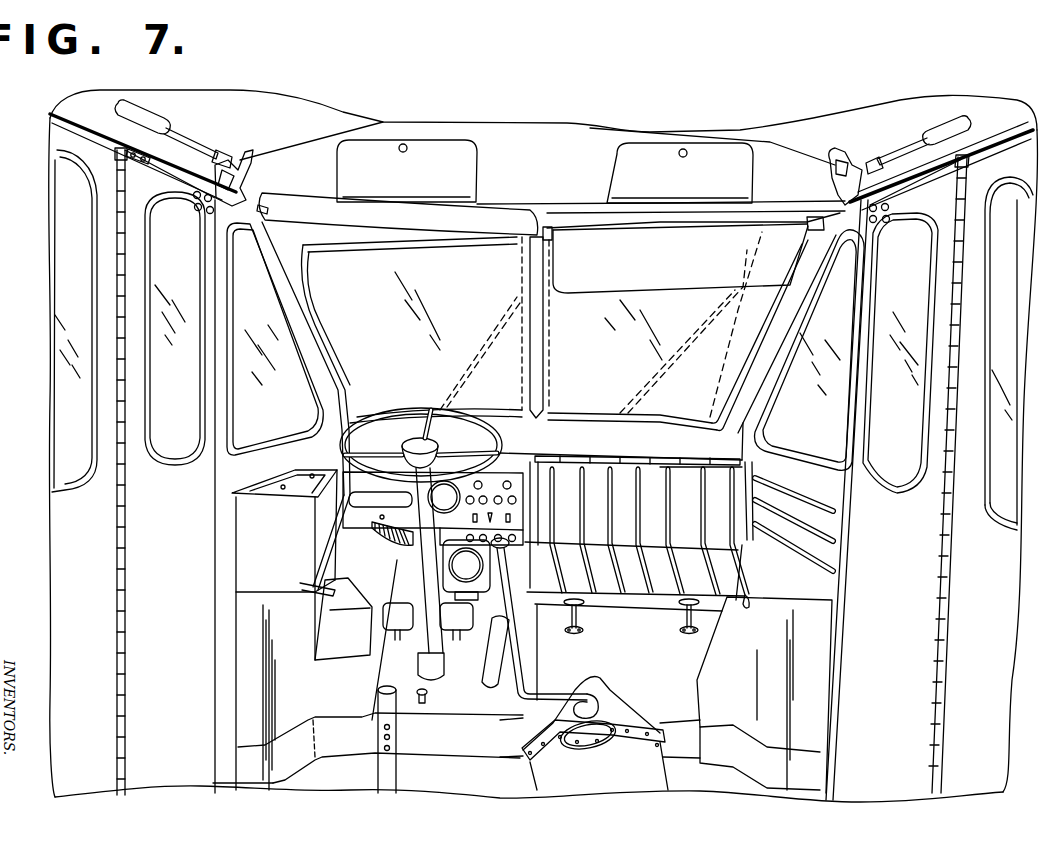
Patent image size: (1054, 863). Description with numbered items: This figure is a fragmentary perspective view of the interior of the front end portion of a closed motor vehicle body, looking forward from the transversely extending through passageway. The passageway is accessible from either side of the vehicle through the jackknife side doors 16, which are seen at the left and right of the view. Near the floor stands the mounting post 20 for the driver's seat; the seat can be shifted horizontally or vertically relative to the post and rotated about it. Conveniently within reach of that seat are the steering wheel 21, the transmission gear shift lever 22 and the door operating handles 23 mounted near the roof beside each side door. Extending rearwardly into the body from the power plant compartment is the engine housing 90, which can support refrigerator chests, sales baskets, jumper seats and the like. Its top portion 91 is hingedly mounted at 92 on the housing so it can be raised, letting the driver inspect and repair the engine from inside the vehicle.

The jackknife side doors 16 is at (72, 506).
The mounting post 20 is at (393, 741).
The steering wheel 21 is at (452, 402).
The transmission gear shift lever 22 is at (523, 656).
The door operating handles 23 is at (175, 133).
The engine housing 90 is at (777, 637).
The top portion of engine housing 91 is at (648, 587).
The hinge mounting 92 is at (572, 458).